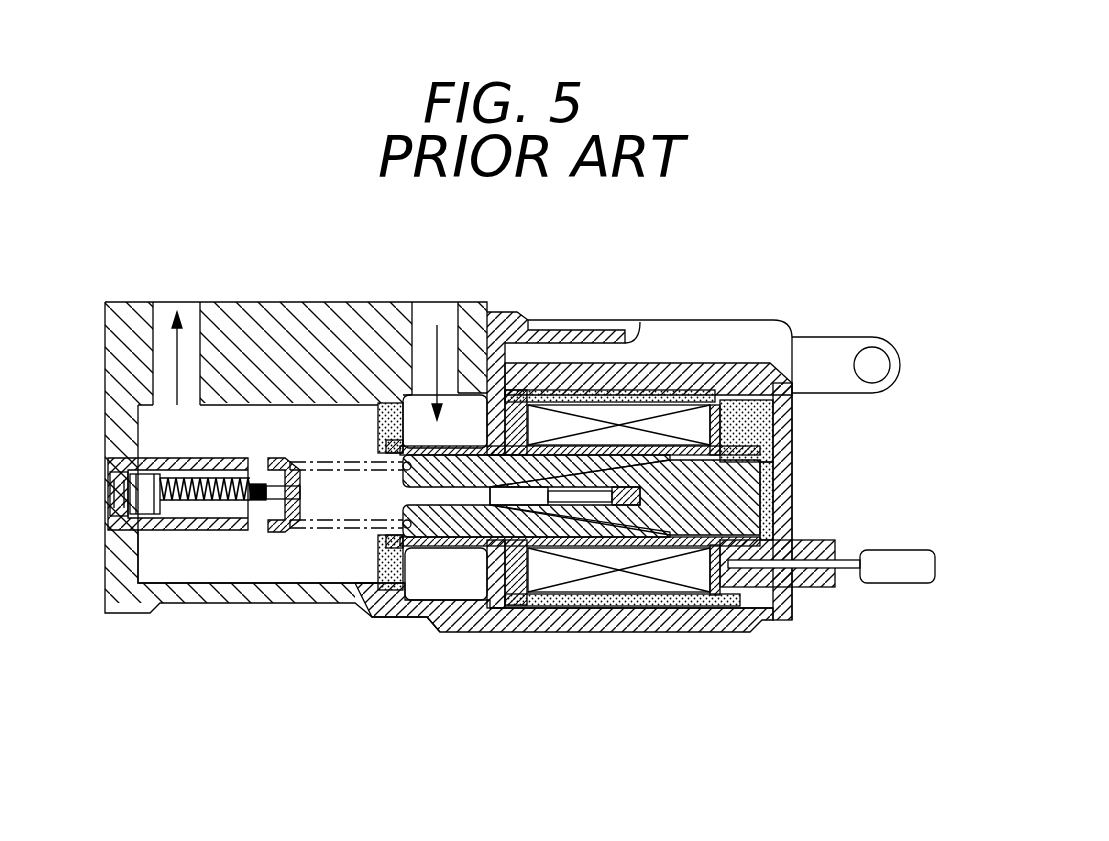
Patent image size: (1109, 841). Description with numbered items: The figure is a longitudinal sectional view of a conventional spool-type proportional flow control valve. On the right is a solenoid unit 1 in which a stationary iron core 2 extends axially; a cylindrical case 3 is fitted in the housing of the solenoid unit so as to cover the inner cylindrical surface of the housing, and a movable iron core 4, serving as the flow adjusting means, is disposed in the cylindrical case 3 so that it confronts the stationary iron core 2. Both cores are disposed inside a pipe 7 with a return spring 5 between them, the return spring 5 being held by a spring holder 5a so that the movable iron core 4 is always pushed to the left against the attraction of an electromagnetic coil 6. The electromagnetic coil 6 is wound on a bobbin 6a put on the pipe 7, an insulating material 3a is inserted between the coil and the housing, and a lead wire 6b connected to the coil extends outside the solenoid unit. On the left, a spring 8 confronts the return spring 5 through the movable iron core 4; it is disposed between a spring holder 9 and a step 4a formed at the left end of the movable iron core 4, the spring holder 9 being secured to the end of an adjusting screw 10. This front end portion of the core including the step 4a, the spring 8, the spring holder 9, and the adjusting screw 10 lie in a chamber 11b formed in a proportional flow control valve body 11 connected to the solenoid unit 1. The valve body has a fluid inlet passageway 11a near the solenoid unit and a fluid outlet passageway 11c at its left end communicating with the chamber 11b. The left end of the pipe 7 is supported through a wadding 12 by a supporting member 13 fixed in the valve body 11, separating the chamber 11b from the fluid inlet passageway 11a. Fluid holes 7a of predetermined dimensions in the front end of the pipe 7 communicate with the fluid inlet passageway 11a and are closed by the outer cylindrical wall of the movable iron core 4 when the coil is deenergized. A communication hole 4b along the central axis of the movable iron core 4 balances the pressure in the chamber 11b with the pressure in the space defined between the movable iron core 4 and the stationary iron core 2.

The solenoid unit 1 is at (616, 338).
The stationary iron core 2 is at (740, 510).
The cylindrical case 3 is at (665, 612).
The insulating material 3a is at (732, 612).
The movable iron core 4 is at (447, 538).
The step 4a is at (405, 468).
The communication hole 4b is at (463, 497).
The return spring 5 is at (560, 612).
The spring holder 5a is at (628, 505).
The electromagnetic coil 6 is at (694, 420).
The bobbin 6a is at (793, 430).
The lead wire 6b is at (815, 585).
The pipe 7 is at (700, 612).
The fluid holes 7a is at (418, 612).
The spring 8 is at (313, 605).
The spring holder 9 is at (257, 605).
The adjusting screw 10 is at (220, 503).
The proportional flow control valve body 11 is at (233, 312).
The fluid inlet passageway 11a is at (448, 312).
The chamber 11b is at (183, 555).
The fluid outlet passageway 11c is at (168, 312).
The wadding 12 is at (393, 604).
The supporting member 13 is at (356, 604).